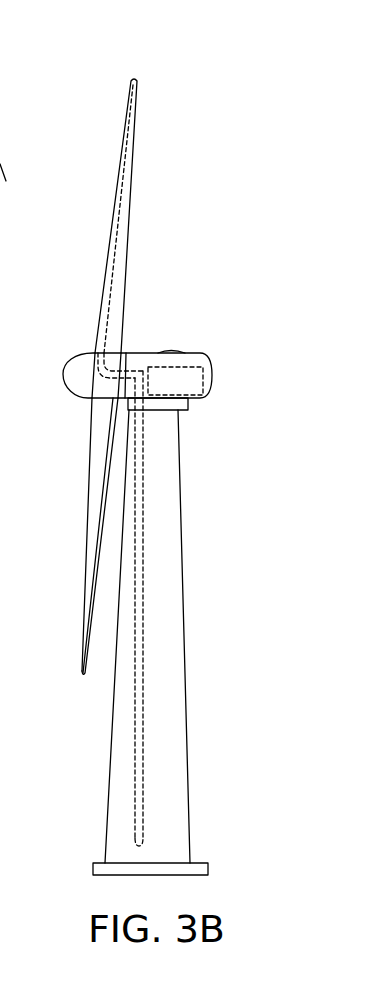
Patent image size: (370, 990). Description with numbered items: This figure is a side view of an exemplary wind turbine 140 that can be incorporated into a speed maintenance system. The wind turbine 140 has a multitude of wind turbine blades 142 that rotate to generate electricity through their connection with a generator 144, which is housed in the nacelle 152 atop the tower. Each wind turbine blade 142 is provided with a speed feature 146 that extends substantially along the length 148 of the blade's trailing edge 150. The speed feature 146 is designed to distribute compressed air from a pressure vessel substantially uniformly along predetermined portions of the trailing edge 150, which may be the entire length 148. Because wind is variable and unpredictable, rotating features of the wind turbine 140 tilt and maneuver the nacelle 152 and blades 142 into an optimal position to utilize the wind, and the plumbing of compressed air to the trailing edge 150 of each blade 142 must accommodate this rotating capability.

The wind turbine 140 is at (215, 47).
The wind turbine blade 142 is at (83, 580).
The generator 144 is at (195, 368).
The speed feature 146 is at (123, 140).
The length 148 is at (140, 78).
The trailing edge 150 is at (97, 679).
The nacelle 152 is at (212, 380).